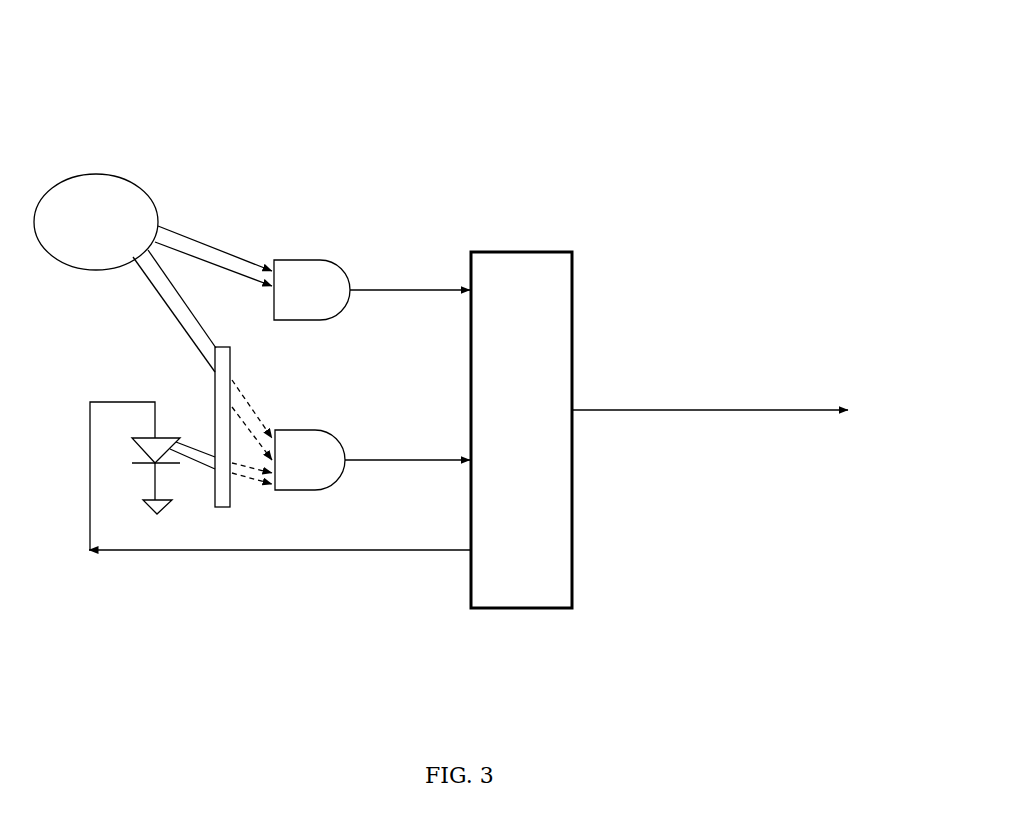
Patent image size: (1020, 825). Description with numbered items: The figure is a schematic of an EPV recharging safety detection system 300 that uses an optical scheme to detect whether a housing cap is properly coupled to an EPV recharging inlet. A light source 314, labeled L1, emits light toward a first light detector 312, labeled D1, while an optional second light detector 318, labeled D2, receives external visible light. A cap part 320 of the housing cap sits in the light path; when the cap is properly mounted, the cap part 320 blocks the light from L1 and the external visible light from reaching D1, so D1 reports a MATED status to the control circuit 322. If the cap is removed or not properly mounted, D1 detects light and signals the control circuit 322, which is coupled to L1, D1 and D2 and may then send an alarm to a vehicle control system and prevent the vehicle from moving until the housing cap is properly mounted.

The EPV recharging safety detection system 300 is at (579, 91).
The first light detector 312 is at (330, 432).
The light source 314 is at (132, 438).
The second light detector 318 is at (330, 261).
The cap part 320 is at (220, 346).
The control circuit 322 is at (573, 328).